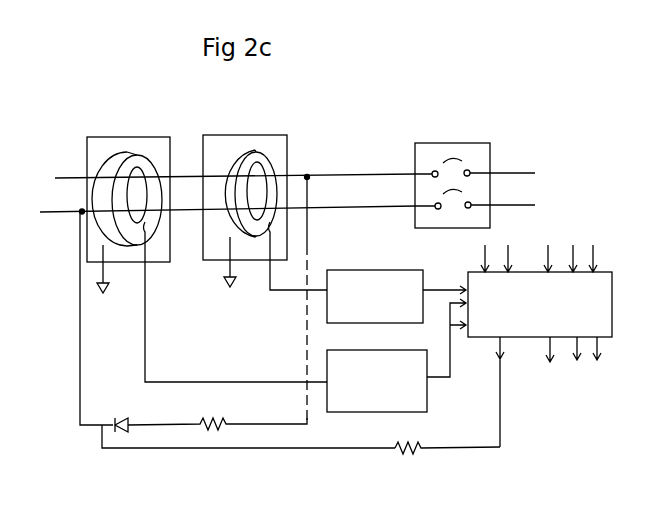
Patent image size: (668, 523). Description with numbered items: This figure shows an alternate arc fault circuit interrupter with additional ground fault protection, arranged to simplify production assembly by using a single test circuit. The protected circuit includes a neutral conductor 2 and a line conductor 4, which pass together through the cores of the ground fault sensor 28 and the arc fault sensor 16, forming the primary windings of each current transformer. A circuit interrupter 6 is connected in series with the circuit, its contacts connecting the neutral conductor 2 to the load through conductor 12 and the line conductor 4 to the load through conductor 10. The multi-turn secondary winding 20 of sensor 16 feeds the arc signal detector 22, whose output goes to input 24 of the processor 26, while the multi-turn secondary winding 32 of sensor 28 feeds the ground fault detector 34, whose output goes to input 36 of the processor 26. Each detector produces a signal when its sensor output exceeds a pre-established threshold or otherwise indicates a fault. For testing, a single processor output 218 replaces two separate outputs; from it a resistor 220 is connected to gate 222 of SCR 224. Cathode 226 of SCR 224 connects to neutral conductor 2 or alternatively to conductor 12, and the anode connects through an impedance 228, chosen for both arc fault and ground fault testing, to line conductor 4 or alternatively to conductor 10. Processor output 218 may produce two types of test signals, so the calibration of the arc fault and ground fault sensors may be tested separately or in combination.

The neutral conductor 2 is at (65, 193).
The line conductor 4 is at (58, 172).
The circuit interrupter 6 is at (457, 142).
The conductor 10 is at (518, 172).
The conductor 12 is at (528, 203).
The sensor 16 is at (232, 134).
The multi-turn secondary winding 20 is at (272, 243).
The arc signal detector 22 is at (368, 268).
The input 24 is at (457, 279).
The processor 26 is at (523, 280).
The ground fault sensor 28 is at (118, 134).
The multi-turn secondary winding 32 is at (147, 251).
The ground fault detector 34 is at (323, 354).
The input 36 is at (448, 302).
The processor output 218 is at (508, 345).
The resistor 220 is at (394, 458).
The gate 222 is at (97, 441).
The SCR 224 is at (125, 418).
The cathode 226 is at (93, 420).
The impedance 228 is at (203, 414).